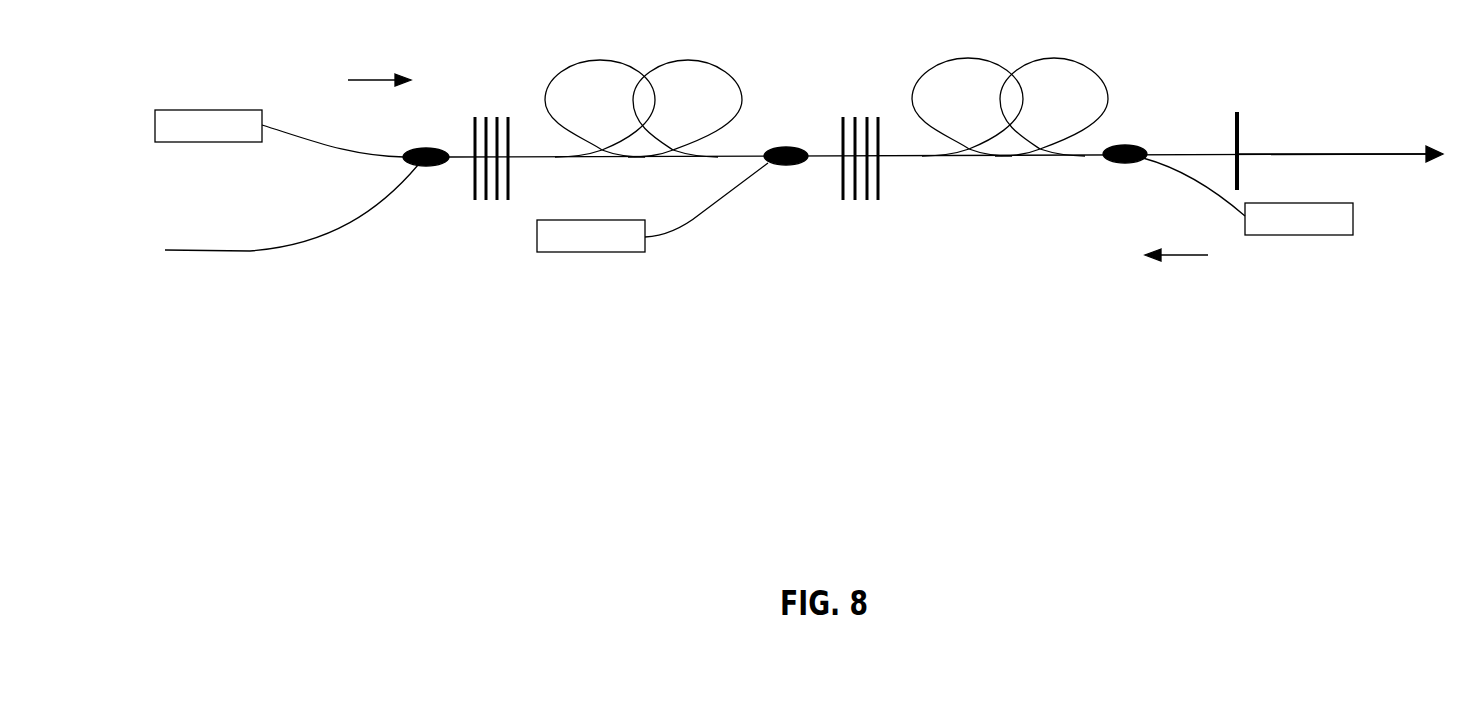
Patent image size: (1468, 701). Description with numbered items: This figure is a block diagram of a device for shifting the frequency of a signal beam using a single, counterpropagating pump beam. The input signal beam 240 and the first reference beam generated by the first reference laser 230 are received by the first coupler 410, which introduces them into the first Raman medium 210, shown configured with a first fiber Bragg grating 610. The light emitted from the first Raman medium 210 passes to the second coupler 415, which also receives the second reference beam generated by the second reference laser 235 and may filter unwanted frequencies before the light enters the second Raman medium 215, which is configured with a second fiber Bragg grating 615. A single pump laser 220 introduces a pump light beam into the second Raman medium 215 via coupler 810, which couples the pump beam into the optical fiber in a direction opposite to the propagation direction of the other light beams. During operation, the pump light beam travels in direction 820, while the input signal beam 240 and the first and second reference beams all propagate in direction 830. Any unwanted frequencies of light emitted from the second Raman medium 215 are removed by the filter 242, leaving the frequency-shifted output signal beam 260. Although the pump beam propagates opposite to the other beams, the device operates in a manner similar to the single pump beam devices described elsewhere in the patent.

The first reference laser 230 is at (196, 137).
The input signal beam 240 is at (206, 242).
The propagation direction of the signal and reference beams 830 is at (401, 64).
The first coupler 410 is at (447, 141).
The first fiber Bragg grating 610 is at (509, 106).
The first Raman medium 210 is at (662, 51).
The second coupler 415 is at (807, 142).
The second reference laser 235 is at (579, 249).
The second fiber Bragg grating 615 is at (877, 107).
The second Raman medium 215 is at (1031, 51).
The coupler 810 is at (1142, 139).
The pump laser 220 is at (1344, 229).
The filter 242 is at (1237, 112).
The output signal beam 260 is at (1361, 147).
The propagation direction of the pump light beam 820 is at (1202, 282).